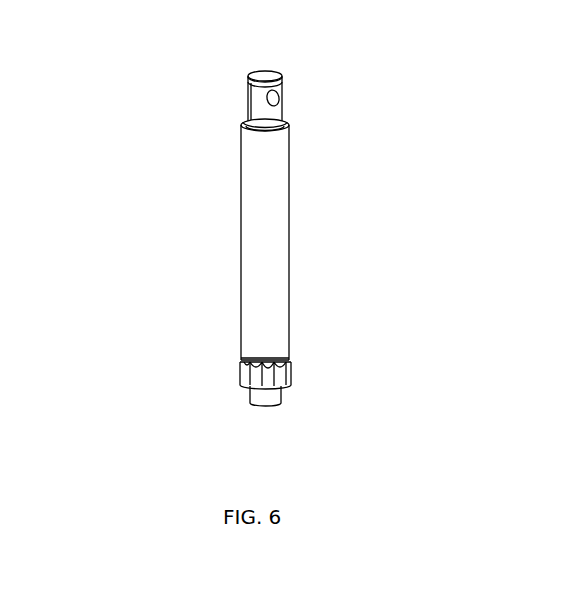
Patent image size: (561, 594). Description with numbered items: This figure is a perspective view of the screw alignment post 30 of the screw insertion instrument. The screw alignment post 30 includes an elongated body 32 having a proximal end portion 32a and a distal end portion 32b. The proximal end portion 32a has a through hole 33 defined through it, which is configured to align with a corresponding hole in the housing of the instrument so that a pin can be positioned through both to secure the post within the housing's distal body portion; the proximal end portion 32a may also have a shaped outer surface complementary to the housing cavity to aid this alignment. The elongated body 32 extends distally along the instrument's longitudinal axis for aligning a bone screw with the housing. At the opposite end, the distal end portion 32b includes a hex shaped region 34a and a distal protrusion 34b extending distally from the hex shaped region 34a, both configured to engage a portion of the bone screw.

The screw alignment post 30 is at (185, 83).
The elongated body 32 is at (323, 240).
The proximal end portion 32a is at (303, 122).
The distal end portion 32b is at (298, 385).
The through hole 33 is at (278, 92).
The hex shaped region 34a is at (243, 368).
The distal protrusion 34b is at (250, 396).